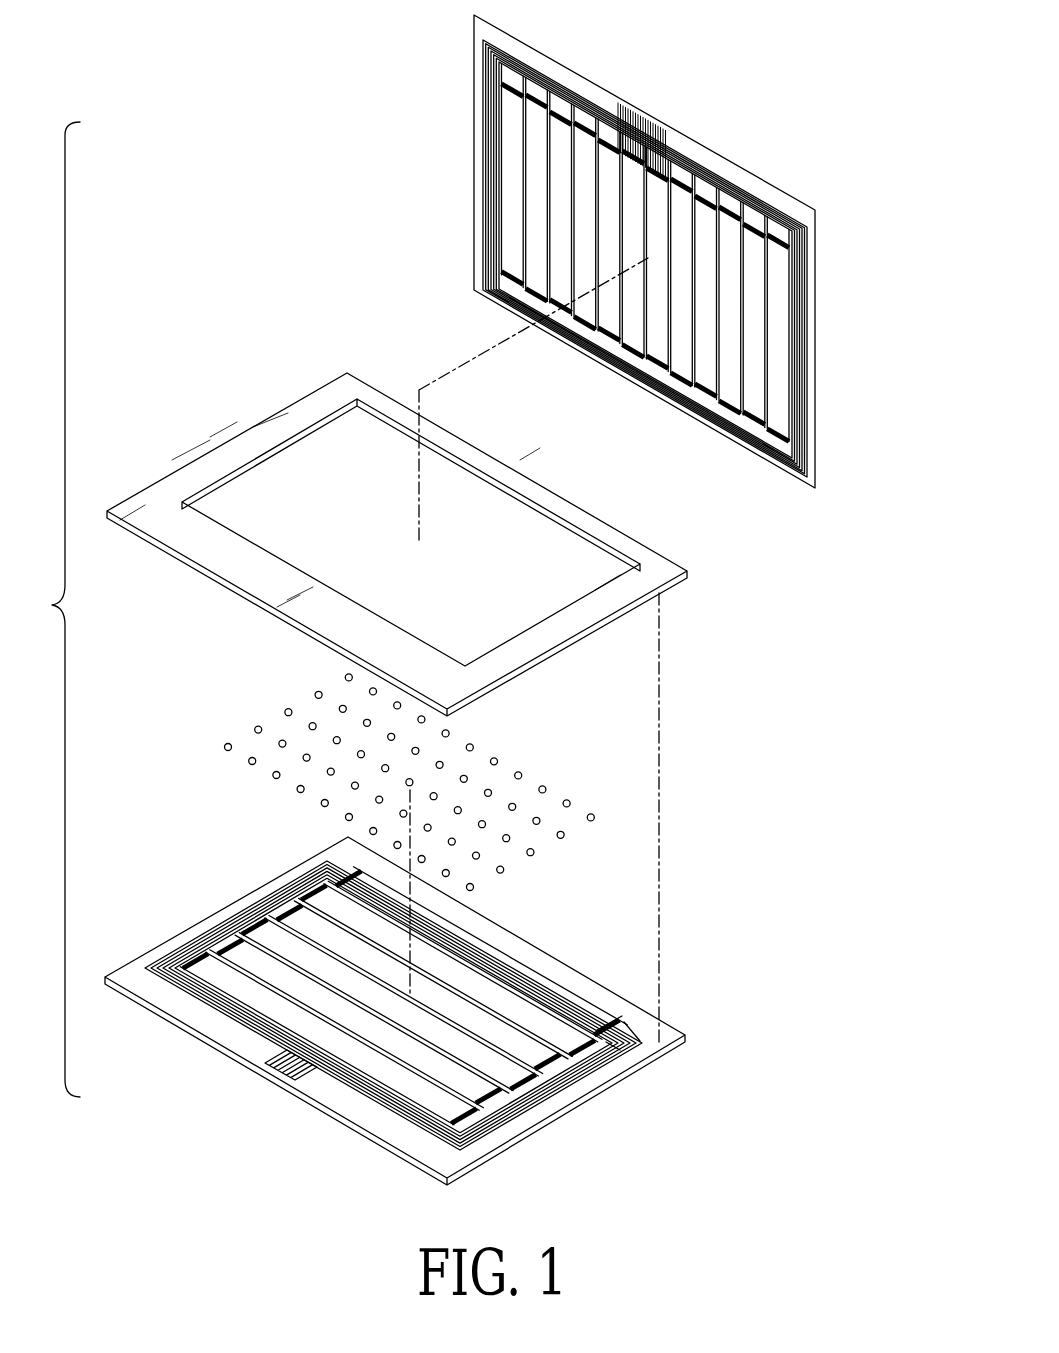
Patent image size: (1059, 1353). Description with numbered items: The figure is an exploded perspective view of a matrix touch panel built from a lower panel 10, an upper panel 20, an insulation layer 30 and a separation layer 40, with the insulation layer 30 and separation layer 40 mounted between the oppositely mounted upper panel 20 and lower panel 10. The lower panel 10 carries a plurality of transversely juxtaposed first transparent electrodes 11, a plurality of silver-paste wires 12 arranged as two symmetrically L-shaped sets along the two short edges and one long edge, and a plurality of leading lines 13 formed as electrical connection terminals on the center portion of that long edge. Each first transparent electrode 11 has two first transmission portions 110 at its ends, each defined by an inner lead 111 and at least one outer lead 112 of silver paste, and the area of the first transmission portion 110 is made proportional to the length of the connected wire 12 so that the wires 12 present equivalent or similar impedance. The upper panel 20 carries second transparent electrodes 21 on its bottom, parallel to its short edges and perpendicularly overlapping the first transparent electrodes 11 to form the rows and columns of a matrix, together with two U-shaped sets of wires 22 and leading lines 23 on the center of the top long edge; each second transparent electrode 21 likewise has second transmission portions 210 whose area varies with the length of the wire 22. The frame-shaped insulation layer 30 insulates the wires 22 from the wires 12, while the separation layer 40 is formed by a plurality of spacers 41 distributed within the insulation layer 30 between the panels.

The lower panel 10 is at (536, 956).
The first transparent electrodes 11 is at (483, 948).
The first transmission portions 110 is at (190, 960).
The inner lead 111 is at (614, 1025).
The outer lead 112 is at (660, 1050).
The wires 12 is at (255, 903).
The leading lines 13 is at (304, 1080).
The upper panel 20 is at (735, 172).
The second transparent electrodes 21 is at (510, 228).
The second transmission portions 210 is at (498, 90).
The wires 22 is at (483, 178).
The leading lines 23 is at (678, 132).
The insulation layer 30 is at (565, 510).
The separation layer 40 is at (572, 768).
The spacers 41 is at (592, 814).